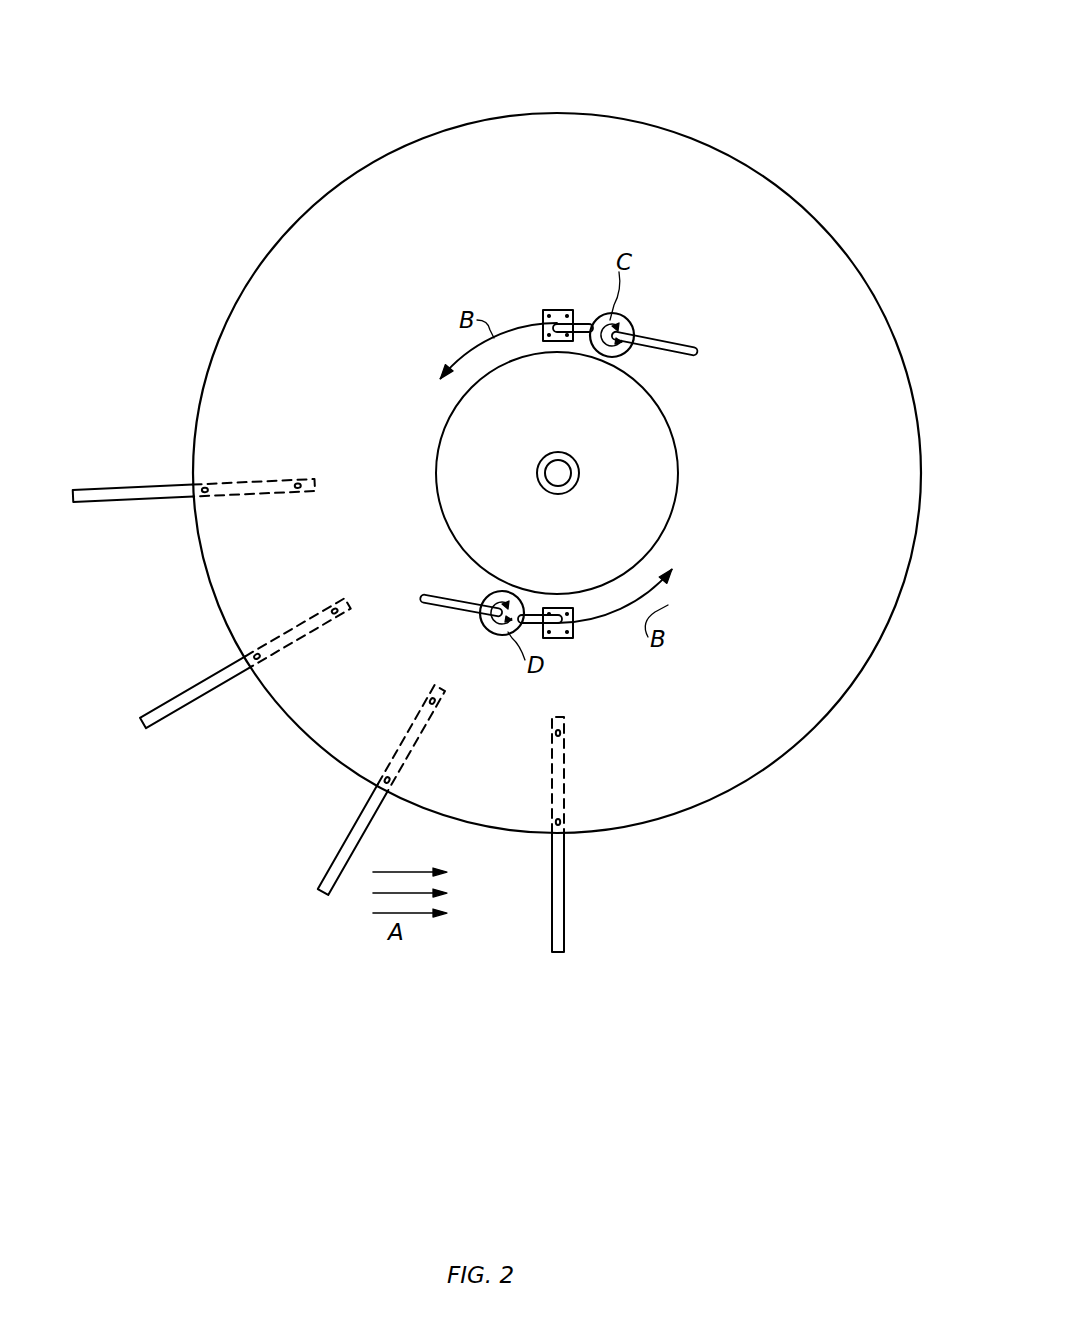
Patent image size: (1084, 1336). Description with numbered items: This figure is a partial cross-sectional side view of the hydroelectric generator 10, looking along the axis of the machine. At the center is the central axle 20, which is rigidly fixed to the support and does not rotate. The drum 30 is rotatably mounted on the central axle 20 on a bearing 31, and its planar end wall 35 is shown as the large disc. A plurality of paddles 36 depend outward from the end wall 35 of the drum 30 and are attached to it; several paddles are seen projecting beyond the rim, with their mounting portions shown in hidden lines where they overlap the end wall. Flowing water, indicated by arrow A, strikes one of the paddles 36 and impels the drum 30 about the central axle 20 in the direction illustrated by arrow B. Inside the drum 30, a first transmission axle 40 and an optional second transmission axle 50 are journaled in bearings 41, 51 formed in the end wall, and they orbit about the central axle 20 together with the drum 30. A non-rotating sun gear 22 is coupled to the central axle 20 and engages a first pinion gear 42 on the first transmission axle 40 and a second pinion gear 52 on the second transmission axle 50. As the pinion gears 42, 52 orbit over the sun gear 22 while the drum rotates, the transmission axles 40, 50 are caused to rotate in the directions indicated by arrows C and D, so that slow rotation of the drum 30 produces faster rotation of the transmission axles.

The hydroelectric generator 10 is at (777, 42).
The central axle 20 is at (571, 466).
The sun gear 22 is at (672, 432).
The drum 30 is at (858, 268).
The bearing 31 is at (539, 486).
The end wall 35 is at (790, 735).
The paddles 36 is at (110, 488).
The first transmission axle 40 is at (667, 342).
The bearing 41 is at (558, 310).
The first pinion gear 42 is at (630, 320).
The second transmission axle 50 is at (452, 607).
The bearing 51 is at (557, 638).
The second pinion gear 52 is at (493, 636).